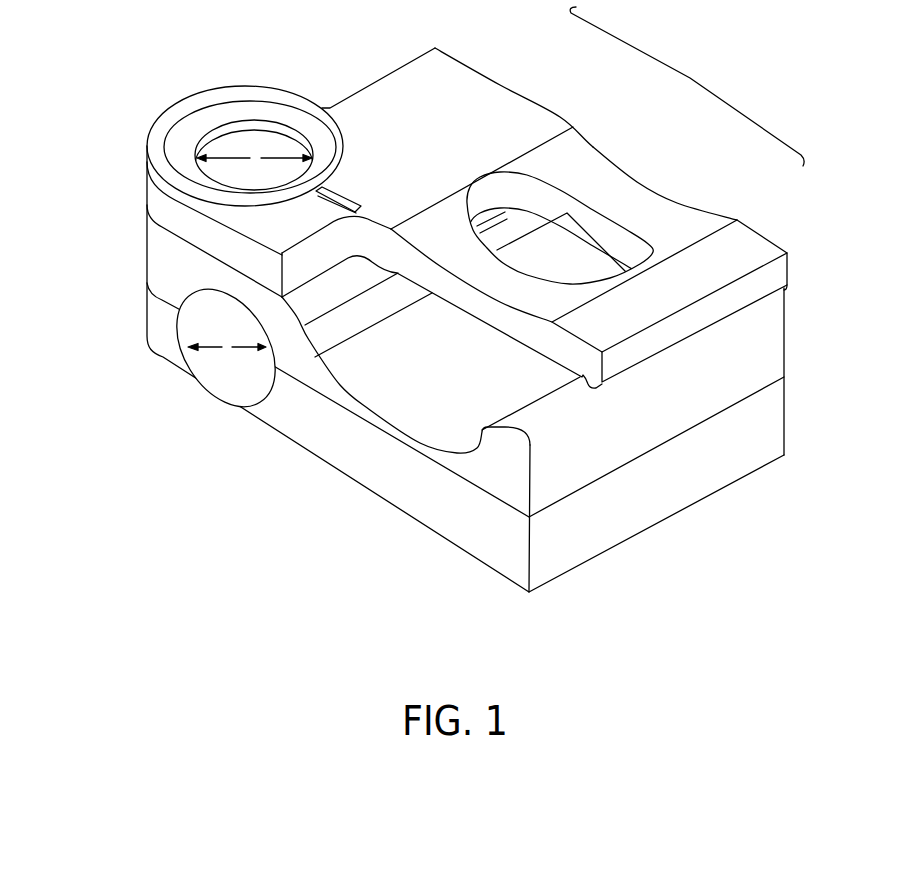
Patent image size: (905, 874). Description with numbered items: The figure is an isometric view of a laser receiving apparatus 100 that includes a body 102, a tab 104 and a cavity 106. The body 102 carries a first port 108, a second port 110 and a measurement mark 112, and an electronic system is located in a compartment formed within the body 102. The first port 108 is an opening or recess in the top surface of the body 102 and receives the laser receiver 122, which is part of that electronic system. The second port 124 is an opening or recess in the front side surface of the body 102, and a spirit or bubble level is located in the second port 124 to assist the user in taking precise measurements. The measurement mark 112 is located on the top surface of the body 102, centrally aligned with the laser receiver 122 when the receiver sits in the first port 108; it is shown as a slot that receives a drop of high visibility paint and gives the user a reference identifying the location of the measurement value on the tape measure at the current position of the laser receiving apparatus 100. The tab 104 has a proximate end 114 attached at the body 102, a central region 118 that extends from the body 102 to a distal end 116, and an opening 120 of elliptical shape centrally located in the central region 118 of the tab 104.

The laser receiving apparatus 100 is at (128, 80).
The body 102 is at (472, 80).
The tab 104 is at (689, 79).
The cavity 106 is at (473, 342).
The first port 108 is at (252, 155).
The second port 110 is at (240, 385).
The measurement mark 112 is at (334, 194).
The proximate end 114 is at (572, 142).
The distal end 116 is at (743, 240).
The central region 118 is at (645, 186).
The opening 120 is at (532, 193).
The laser receiver 122 is at (265, 132).
The second port 124 is at (227, 352).